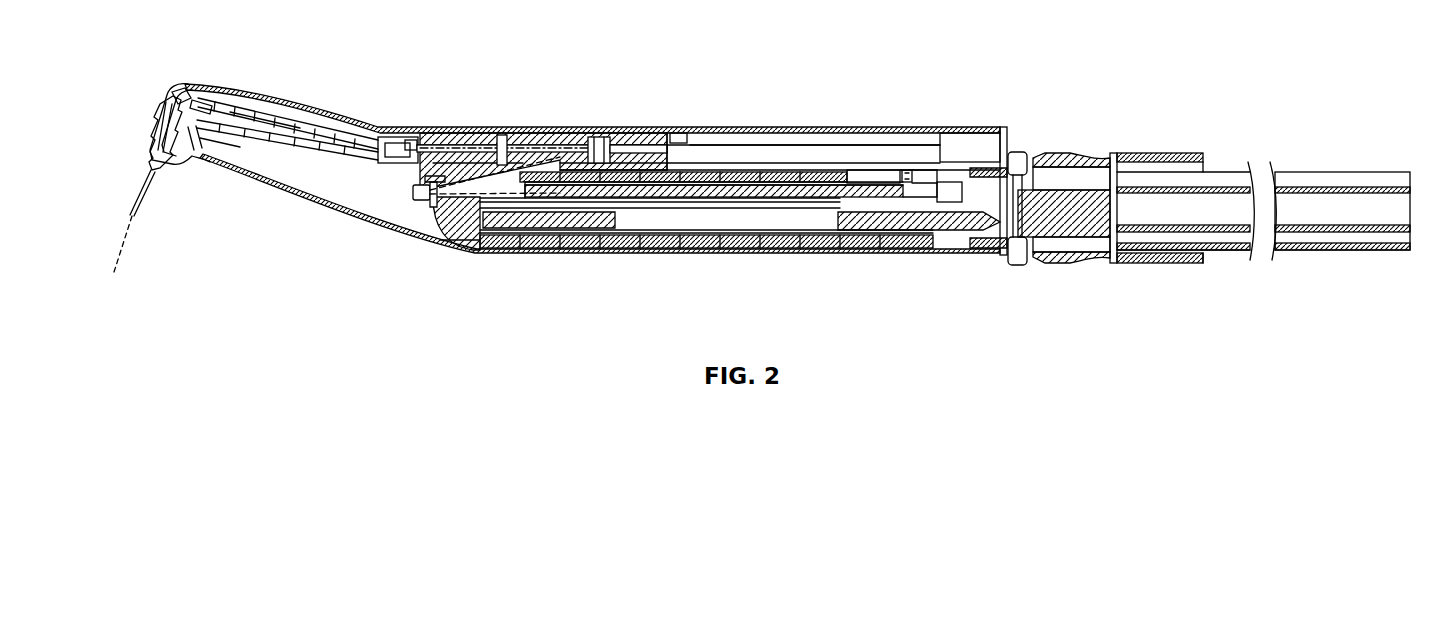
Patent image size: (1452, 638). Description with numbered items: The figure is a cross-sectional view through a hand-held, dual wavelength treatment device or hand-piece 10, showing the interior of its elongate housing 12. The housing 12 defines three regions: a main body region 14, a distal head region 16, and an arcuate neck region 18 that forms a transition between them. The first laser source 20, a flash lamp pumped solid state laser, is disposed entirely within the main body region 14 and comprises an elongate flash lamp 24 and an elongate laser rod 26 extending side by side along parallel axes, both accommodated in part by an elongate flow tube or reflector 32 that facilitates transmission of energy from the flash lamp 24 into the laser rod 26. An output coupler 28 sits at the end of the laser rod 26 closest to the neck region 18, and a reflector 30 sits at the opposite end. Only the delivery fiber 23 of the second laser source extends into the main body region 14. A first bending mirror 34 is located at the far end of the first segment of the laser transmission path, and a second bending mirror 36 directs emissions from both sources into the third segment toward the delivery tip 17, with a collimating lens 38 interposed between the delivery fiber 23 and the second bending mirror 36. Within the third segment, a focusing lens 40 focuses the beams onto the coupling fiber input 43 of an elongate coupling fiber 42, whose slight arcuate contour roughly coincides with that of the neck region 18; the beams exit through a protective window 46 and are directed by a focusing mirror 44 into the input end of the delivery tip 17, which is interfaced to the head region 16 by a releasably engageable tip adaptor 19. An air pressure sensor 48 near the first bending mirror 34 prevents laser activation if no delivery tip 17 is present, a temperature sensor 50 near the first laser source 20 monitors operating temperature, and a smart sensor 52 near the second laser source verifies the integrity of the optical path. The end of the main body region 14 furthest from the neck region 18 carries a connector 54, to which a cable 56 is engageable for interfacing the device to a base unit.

The hand-piece 10 is at (1006, 68).
The housing 12 is at (637, 252).
The main body region 14 is at (884, 145).
The distal head region 16 is at (167, 110).
The delivery tip 17 is at (149, 205).
The neck region 18 is at (327, 200).
The tip adaptor 19 is at (152, 140).
The first laser source 20 is at (717, 186).
The delivery fiber 23 is at (650, 135).
The flash lamp 24 is at (757, 218).
The laser rod 26 is at (690, 182).
The output coupler 28 is at (560, 140).
The reflector 30 is at (922, 187).
The flow tube 32 is at (813, 165).
The first bending mirror 34 is at (430, 203).
The second bending mirror 36 is at (596, 135).
The collimating lens 38 is at (604, 140).
The focusing lens 40 is at (498, 135).
The coupling fiber 42 is at (303, 130).
The coupling fiber input 43 is at (420, 140).
The focusing mirror 44 is at (178, 90).
The protective window 46 is at (206, 96).
The air pressure sensor 48 is at (416, 198).
The temperature sensor 50 is at (772, 168).
The smart sensor 52 is at (686, 133).
The connector 54 is at (1068, 263).
The cable 56 is at (1343, 252).